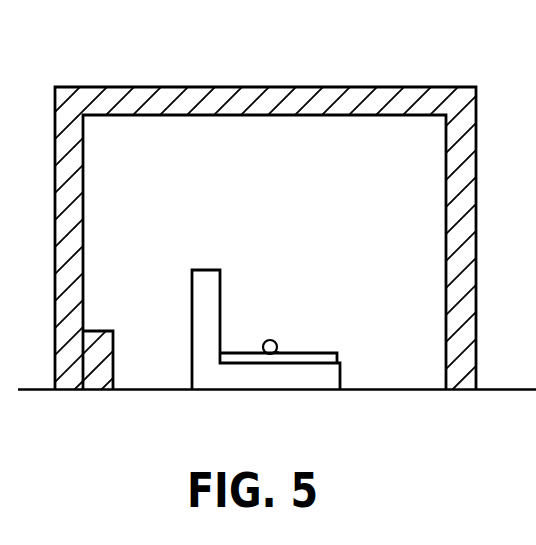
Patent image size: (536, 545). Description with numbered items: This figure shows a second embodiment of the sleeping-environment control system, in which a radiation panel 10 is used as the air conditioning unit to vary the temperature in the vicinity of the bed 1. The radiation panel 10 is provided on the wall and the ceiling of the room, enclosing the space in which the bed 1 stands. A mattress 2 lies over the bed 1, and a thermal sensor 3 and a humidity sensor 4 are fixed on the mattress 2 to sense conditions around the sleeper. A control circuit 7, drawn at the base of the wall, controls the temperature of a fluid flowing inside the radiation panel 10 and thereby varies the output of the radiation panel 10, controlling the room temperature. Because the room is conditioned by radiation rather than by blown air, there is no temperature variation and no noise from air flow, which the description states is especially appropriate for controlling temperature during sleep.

The radiation panel 10 is at (251, 100).
The control circuit 7 is at (102, 372).
The bed 1 is at (340, 380).
The mattress 2 is at (307, 353).
The thermal sensor 3 is at (265, 352).
The humidity sensor 4 is at (277, 352).